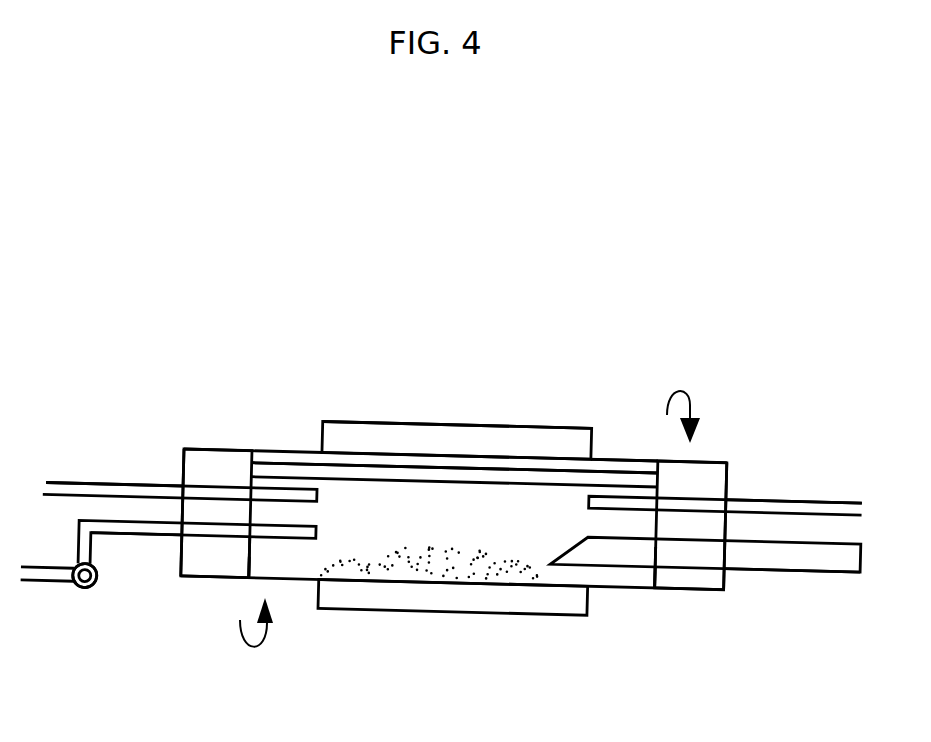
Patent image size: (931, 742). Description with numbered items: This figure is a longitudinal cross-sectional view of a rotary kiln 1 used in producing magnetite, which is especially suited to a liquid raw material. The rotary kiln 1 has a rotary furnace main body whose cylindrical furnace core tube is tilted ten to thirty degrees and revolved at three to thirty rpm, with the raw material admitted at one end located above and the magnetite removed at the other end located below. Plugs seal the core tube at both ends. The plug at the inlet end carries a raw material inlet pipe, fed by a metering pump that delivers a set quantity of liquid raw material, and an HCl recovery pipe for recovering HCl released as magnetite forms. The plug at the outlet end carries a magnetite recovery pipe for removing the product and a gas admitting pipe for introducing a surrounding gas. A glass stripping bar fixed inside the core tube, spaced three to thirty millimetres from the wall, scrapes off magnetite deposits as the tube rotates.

The rotary kiln 1 is at (558, 391).